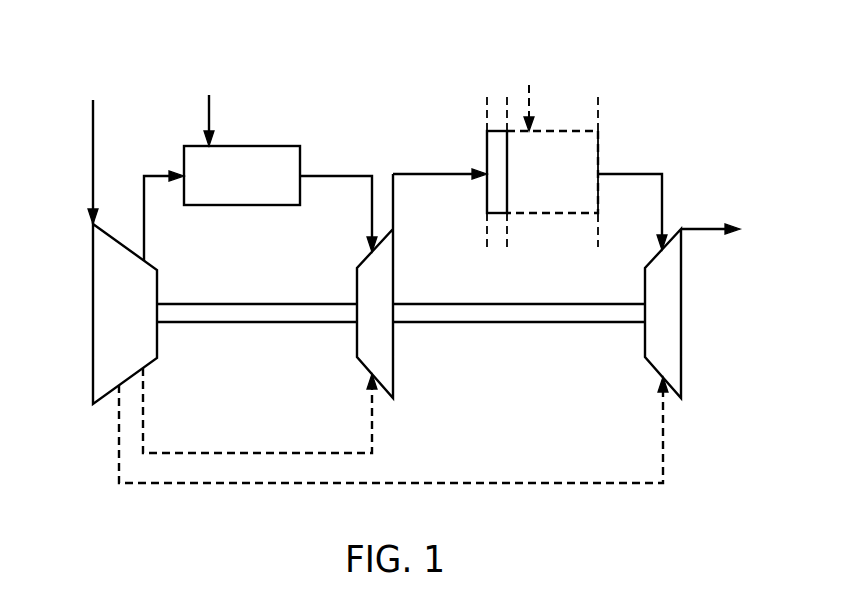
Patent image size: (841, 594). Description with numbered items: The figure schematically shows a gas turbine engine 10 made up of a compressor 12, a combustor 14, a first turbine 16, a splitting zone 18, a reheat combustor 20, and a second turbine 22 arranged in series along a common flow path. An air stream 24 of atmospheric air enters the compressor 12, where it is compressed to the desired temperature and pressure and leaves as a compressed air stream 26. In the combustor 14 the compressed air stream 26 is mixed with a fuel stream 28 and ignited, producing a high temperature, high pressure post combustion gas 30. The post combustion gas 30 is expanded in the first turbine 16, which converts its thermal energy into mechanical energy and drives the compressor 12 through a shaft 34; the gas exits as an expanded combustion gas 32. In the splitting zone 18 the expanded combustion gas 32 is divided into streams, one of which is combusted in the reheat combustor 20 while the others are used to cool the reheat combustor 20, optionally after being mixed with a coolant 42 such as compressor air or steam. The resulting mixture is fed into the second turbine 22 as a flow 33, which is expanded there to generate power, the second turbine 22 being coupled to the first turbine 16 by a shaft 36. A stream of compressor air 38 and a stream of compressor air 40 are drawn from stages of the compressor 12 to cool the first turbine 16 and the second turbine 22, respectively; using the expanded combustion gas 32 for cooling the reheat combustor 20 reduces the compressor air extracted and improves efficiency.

The gas turbine engine 10 is at (676, 63).
The compressor 12 is at (92, 306).
The combustor 14 is at (266, 145).
The first turbine 16 is at (395, 285).
The splitting zone 18 is at (496, 130).
The reheat combustor 20 is at (567, 130).
The second turbine 22 is at (684, 335).
The air stream 24 is at (92, 150).
The compressed air stream 26 is at (150, 173).
The fuel stream 28 is at (210, 110).
The post combustion gas 30 is at (336, 175).
The expanded combustion gas 32 is at (409, 172).
The flow 33 is at (665, 212).
The shaft 34 is at (257, 324).
The shaft 36 is at (555, 324).
The stream of compressor air 38 is at (512, 482).
The stream of compressor air 40 is at (298, 452).
The coolant 42 is at (531, 98).